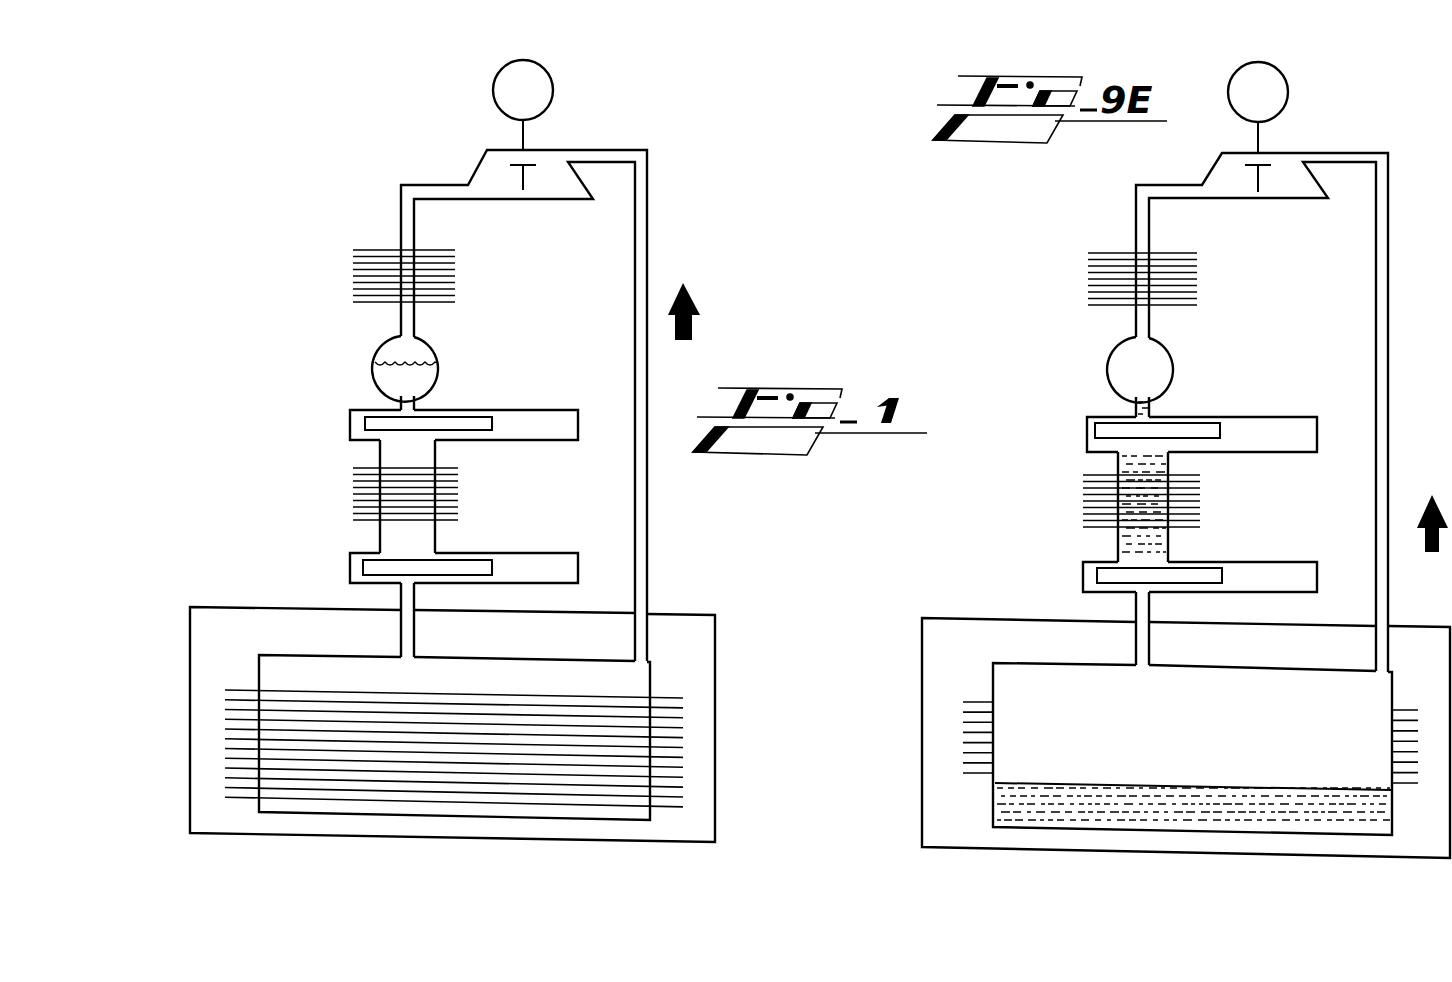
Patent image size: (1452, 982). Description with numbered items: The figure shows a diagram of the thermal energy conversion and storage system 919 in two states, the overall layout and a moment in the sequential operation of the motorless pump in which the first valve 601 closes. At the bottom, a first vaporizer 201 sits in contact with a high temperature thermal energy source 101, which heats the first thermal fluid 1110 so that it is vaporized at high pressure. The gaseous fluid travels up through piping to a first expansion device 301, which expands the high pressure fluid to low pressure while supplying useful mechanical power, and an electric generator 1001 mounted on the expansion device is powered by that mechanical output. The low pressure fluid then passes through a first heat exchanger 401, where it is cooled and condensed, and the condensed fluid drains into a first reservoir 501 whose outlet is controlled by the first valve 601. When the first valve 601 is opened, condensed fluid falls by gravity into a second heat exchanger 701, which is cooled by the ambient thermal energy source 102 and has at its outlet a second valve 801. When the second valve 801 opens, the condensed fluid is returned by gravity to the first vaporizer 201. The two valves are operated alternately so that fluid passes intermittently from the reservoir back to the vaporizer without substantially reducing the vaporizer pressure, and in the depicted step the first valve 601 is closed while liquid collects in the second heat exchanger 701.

In FIG. 1, the high temperature thermal energy source 101 is at (693, 622).
In FIG. 9E, the high temperature thermal energy source 101 is at (939, 626).
In FIG. 1, the ambient thermal energy source 102 is at (315, 432).
In FIG. 9E, the ambient thermal energy source 102 is at (1018, 557).
In FIG. 1, the first vaporizer 201 is at (230, 742).
In FIG. 9E, the first vaporizer 201 is at (963, 735).
In FIG. 1, the first expansion device 301 is at (533, 202).
In FIG. 9E, the first expansion device 301 is at (1265, 202).
In FIG. 1, the first heat exchanger 401 is at (355, 275).
In FIG. 9E, the first heat exchanger 401 is at (1197, 285).
In FIG. 1, the first reservoir 501 is at (442, 373).
In FIG. 9E, the first reservoir 501 is at (1177, 363).
In FIG. 1, the first valve 601 is at (460, 433).
In FIG. 9E, the first valve 601 is at (1197, 440).
In FIG. 1, the second heat exchanger 701 is at (355, 497).
In FIG. 9E, the second heat exchanger 701 is at (1085, 502).
In FIG. 1, the second valve 801 is at (468, 560).
In FIG. 9E, the second valve 801 is at (1202, 573).
In FIG. 1, the heat engine system 919 is at (288, 84).
In FIG. 1, the electric generator 1001 is at (493, 90).
In FIG. 9E, the electric generator 1001 is at (1292, 87).
In FIG. 1, the first thermal fluid 1110 is at (370, 370).
In FIG. 9E, the first thermal fluid 1110 is at (1120, 373).